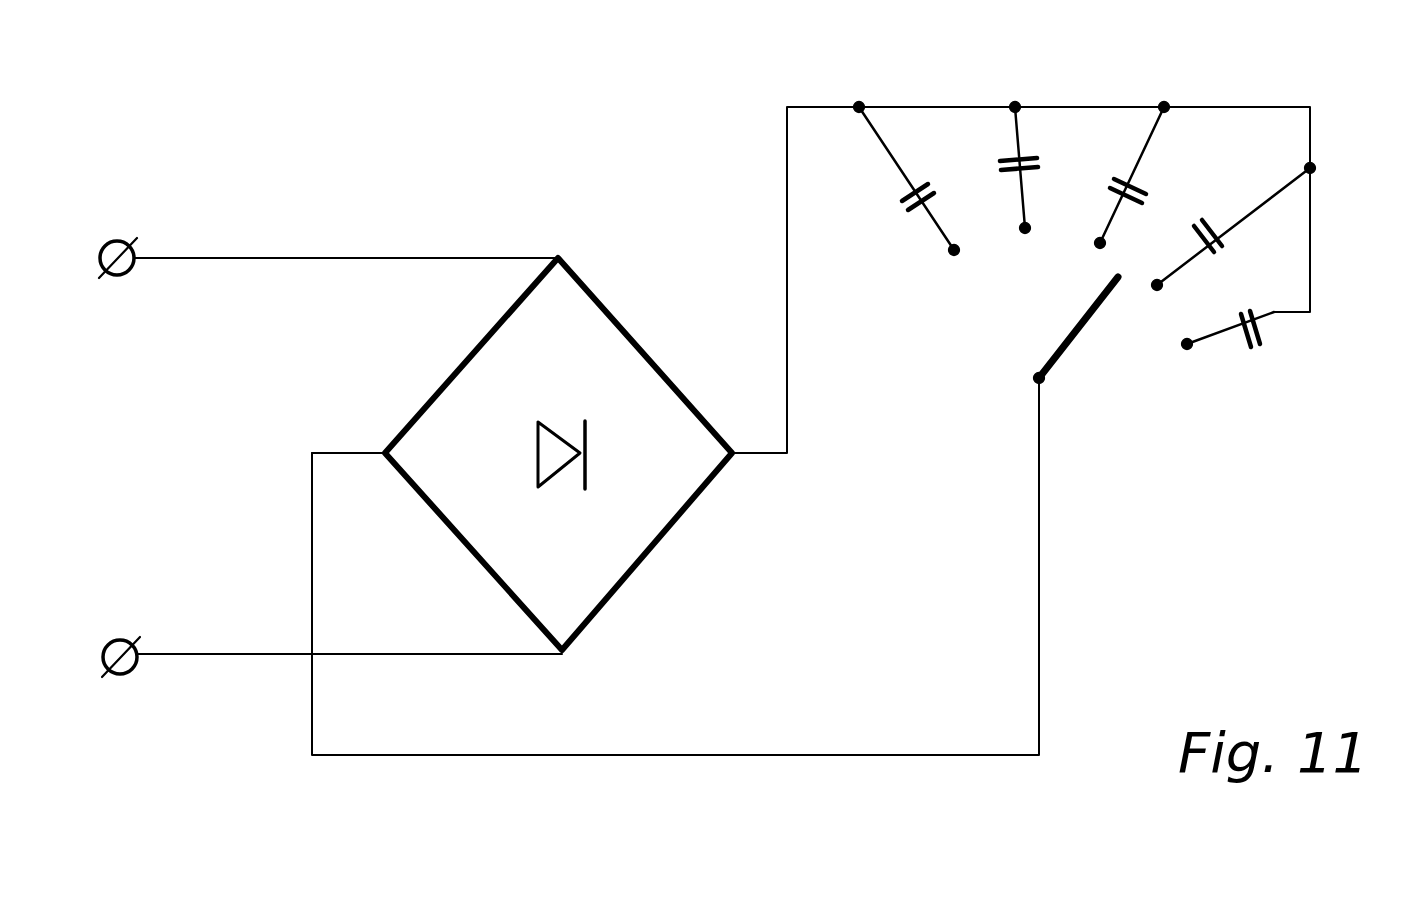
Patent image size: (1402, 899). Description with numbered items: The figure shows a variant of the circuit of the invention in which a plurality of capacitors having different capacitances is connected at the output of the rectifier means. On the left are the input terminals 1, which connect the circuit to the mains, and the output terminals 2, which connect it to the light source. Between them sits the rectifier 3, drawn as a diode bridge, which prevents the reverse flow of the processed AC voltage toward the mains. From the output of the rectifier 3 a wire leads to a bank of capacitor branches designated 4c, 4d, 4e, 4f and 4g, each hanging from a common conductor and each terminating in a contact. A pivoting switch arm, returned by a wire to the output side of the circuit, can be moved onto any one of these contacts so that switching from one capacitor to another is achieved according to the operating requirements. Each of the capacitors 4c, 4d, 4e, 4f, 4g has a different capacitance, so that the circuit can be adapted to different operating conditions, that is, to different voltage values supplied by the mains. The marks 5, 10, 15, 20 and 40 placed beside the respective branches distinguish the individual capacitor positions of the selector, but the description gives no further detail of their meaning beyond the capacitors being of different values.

The input terminals 1 is at (105, 247).
The output terminals 2 is at (127, 677).
The rectifier 3 is at (578, 316).
The capacitor 4c is at (897, 212).
The capacitor 4d is at (1036, 158).
The capacitor 4e is at (1143, 185).
The capacitor 4f is at (1223, 248).
The capacitor 4g is at (1272, 338).
The switch contact 5 is at (907, 179).
The switch contact 10 is at (996, 168).
The switch contact 15 is at (1132, 175).
The switch contact 20 is at (1234, 227).
The switch contact 40 is at (1228, 354).